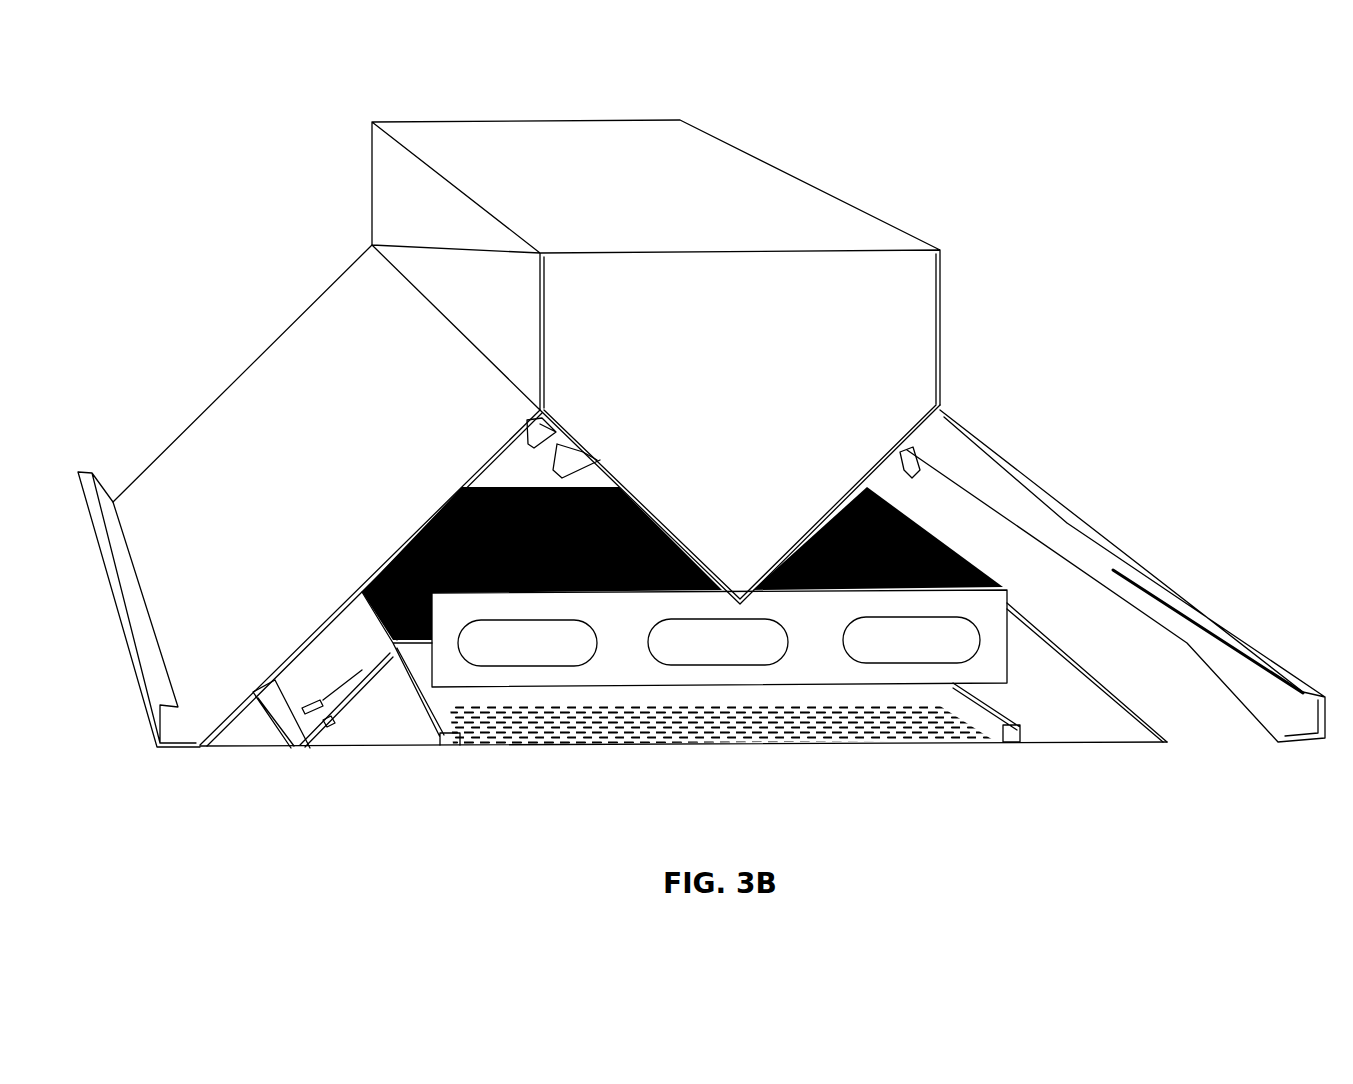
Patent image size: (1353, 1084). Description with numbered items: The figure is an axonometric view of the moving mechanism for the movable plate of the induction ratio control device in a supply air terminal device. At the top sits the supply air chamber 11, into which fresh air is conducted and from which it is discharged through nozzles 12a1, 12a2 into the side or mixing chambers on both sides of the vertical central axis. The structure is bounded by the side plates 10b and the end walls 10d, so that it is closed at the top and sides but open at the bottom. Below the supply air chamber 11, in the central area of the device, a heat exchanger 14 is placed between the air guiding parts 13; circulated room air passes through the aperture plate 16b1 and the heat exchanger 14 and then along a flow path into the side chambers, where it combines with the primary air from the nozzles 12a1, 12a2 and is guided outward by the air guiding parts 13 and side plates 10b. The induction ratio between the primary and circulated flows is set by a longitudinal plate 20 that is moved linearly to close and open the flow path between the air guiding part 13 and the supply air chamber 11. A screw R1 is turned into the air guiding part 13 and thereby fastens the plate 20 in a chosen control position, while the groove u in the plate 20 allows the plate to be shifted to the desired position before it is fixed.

The supply air chamber 11 is at (795, 182).
The side plate 10b is at (222, 395).
The end wall 10d is at (217, 748).
The nozzle 12a1 is at (594, 464).
The nozzle 12a2 is at (536, 424).
The air guiding part 13 is at (362, 682).
The heat exchanger 14 is at (583, 678).
The aperture plate 16b1 is at (890, 745).
The plate 20 is at (345, 652).
The screw R1 is at (316, 703).
The groove u is at (343, 700).